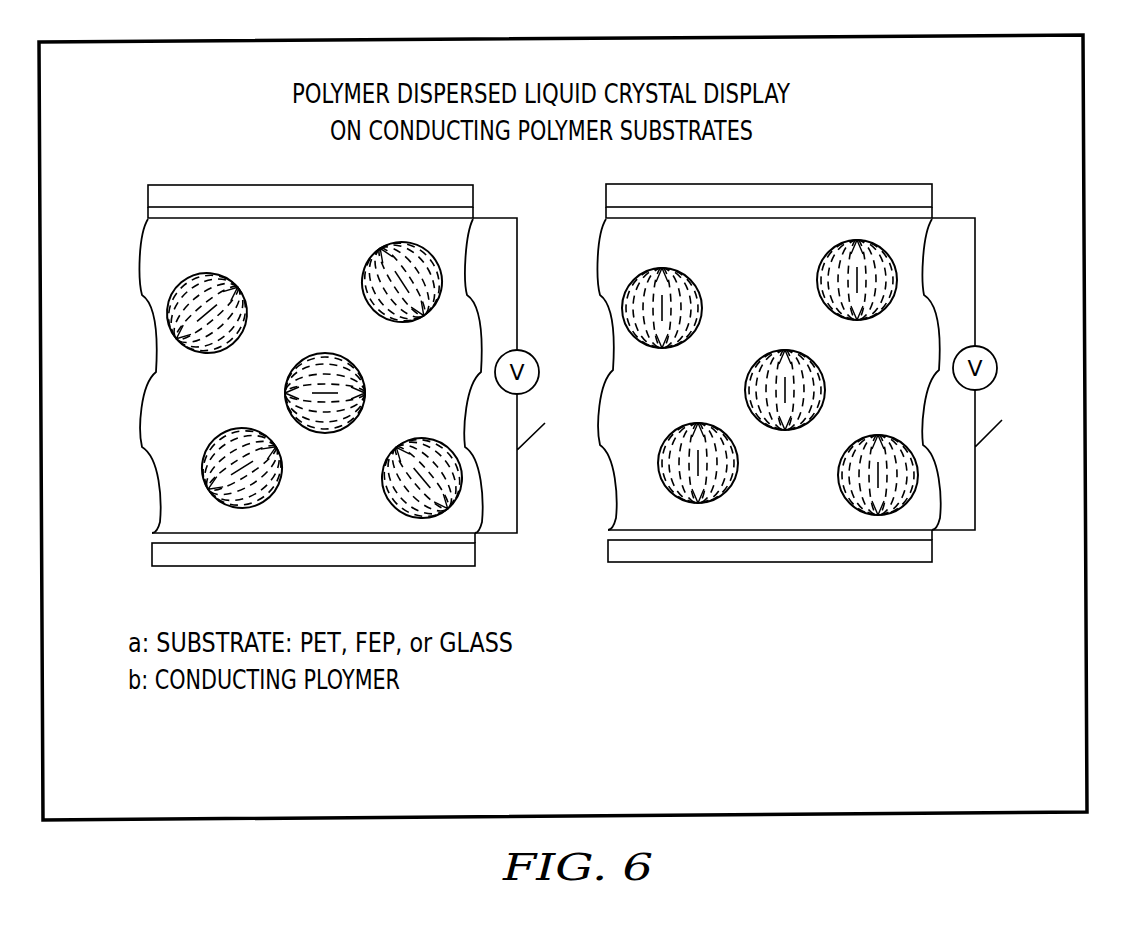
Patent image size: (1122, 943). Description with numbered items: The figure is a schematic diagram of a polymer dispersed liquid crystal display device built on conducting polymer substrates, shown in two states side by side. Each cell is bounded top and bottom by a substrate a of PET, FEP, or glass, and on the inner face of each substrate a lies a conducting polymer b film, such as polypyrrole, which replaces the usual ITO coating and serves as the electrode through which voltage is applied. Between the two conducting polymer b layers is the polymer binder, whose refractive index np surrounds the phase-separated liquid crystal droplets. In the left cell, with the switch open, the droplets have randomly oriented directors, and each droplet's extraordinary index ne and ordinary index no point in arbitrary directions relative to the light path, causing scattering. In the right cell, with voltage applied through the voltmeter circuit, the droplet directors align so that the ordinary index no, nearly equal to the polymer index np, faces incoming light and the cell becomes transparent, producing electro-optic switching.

The substrate a is at (527, 378).
The conducting polymer b is at (527, 378).
The extraordinary refractive index ne is at (234, 283).
The ordinary refractive index no is at (237, 342).
The polymer refractive index np is at (660, 378).